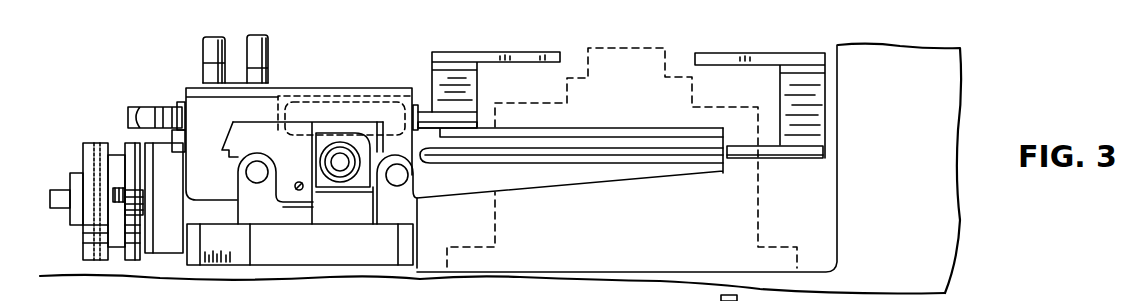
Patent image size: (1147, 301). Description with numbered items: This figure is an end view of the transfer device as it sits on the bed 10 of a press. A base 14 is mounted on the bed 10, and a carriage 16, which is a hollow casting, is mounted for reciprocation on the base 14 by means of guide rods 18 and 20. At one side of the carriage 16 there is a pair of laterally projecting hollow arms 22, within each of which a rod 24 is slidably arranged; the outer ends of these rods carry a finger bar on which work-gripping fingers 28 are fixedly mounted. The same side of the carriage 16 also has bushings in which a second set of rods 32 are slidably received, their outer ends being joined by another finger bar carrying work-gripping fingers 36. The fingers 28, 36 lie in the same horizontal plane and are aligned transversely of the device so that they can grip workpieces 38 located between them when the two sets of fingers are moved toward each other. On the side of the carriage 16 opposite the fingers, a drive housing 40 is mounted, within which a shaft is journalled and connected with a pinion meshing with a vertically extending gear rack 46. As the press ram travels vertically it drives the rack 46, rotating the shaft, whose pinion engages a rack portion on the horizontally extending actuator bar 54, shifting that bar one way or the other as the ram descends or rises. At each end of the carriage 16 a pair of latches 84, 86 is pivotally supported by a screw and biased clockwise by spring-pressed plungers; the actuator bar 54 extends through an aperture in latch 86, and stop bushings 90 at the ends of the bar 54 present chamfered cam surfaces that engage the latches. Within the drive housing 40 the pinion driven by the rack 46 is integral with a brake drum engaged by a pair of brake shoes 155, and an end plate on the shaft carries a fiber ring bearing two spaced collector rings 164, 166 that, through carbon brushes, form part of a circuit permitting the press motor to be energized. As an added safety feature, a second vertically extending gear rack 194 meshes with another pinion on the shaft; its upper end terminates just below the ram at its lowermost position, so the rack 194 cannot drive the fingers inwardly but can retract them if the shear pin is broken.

The bed 10 is at (944, 245).
The base 14 is at (283, 258).
The carriage 16 is at (324, 86).
The guide rod 18 is at (252, 173).
The guide rod 20 is at (400, 182).
The hollow arm 22 is at (580, 180).
The rod 24 is at (798, 153).
The work-gripping finger 28 is at (735, 63).
The rod 32 is at (425, 112).
The work-gripping finger 36 is at (523, 63).
The workpiece 38 is at (622, 72).
The drive housing 40 is at (200, 215).
The gear rack 46 is at (208, 53).
The actuator bar 54 is at (338, 166).
The latch 84 is at (318, 140).
The latch 86 is at (355, 140).
The stop bushing 90 is at (347, 177).
The brake shoe 155 is at (130, 258).
The collector ring 164 is at (115, 277).
The collector ring 166 is at (90, 143).
The gear rack 194 is at (268, 52).